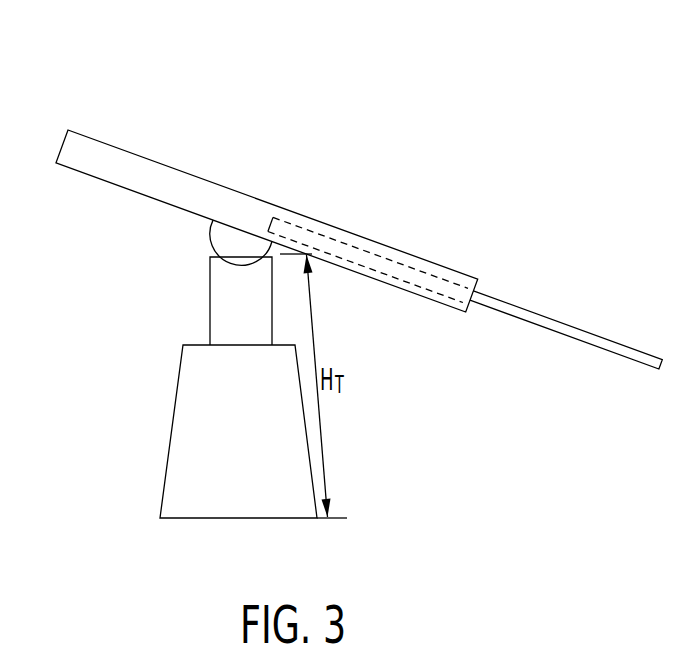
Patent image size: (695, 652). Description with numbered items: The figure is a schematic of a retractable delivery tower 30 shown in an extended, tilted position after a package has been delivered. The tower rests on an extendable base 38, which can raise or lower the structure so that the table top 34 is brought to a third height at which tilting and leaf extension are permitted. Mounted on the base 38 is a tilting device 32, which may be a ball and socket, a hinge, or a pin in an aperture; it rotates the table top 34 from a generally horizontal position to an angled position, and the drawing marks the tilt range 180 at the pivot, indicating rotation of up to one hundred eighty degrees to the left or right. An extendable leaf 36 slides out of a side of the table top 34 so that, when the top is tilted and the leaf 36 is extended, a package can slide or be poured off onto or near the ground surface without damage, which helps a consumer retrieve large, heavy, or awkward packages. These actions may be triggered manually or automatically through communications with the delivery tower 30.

The delivery tower 30 is at (68, 91).
The tilting device 32 is at (212, 253).
The table top 34 is at (260, 207).
The extendable leaf 36 is at (524, 313).
The base 38 is at (185, 438).
The pivot bearing 180 is at (241, 242).